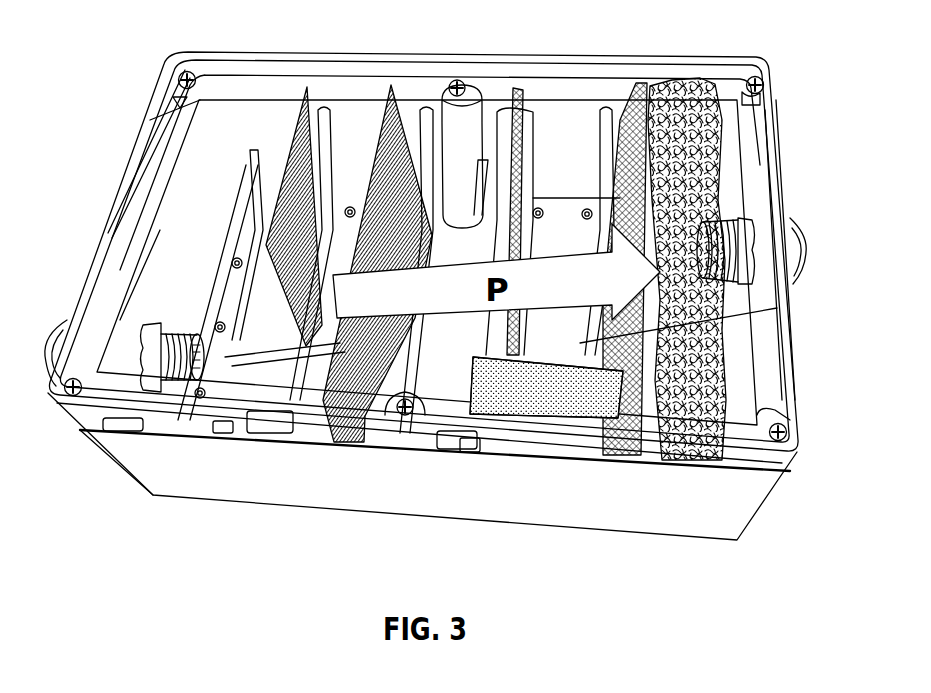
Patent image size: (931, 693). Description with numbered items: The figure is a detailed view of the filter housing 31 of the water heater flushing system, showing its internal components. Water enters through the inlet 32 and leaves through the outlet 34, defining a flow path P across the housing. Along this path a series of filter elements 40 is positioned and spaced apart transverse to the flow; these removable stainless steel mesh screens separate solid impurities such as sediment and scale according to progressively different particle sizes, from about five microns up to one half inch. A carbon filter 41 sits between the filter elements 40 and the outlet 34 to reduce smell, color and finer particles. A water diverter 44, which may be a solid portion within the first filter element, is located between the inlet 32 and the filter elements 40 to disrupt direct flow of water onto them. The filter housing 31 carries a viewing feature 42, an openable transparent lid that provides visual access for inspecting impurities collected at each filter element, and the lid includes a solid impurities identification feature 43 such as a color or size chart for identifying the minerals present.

The filter housing 31 is at (657, 521).
The inlet 32 is at (63, 342).
The outlet 34 is at (790, 229).
The filter elements 40 is at (250, 148).
The carbon filter 41 is at (712, 338).
The viewing feature 42 is at (190, 210).
The solid impurities identification feature 43 is at (540, 407).
The water diverter 44 is at (243, 313).